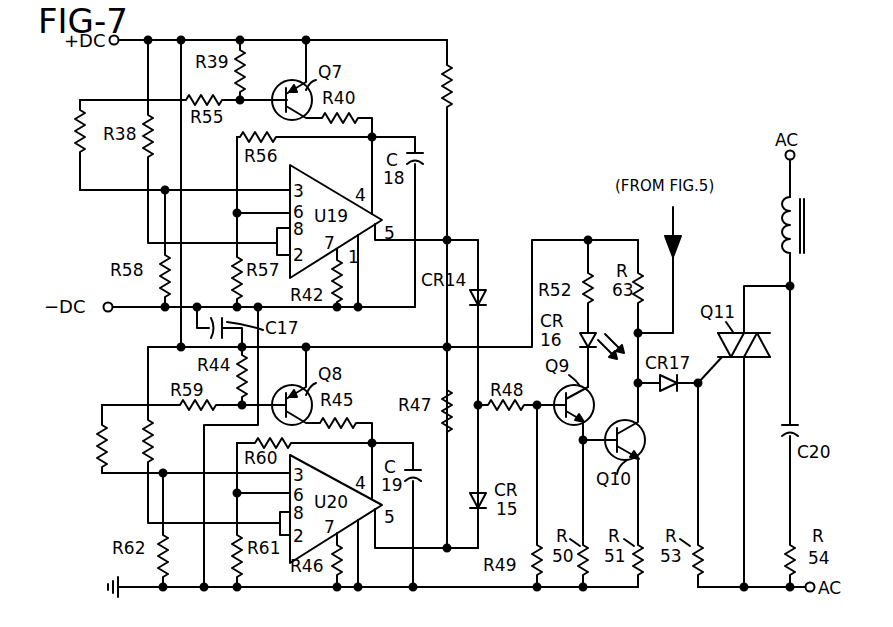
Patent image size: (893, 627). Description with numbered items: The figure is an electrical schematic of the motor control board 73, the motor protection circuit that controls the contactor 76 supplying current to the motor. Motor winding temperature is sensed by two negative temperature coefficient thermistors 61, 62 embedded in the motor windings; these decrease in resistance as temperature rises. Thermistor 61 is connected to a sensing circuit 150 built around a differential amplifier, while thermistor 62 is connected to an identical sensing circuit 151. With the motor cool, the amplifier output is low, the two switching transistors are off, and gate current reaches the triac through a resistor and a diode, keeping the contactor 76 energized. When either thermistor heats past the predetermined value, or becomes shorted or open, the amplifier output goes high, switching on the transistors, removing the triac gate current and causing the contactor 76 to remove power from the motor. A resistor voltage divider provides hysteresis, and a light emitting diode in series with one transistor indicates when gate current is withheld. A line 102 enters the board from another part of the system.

The thermistor 61 is at (76, 146).
The thermistor 62 is at (100, 437).
The motor control board 73 is at (542, 182).
The contactor 76 is at (779, 230).
The input line from FIG. 5 102 is at (675, 282).
The sensing circuit 150 is at (502, 91).
The sensing circuit 151 is at (124, 508).